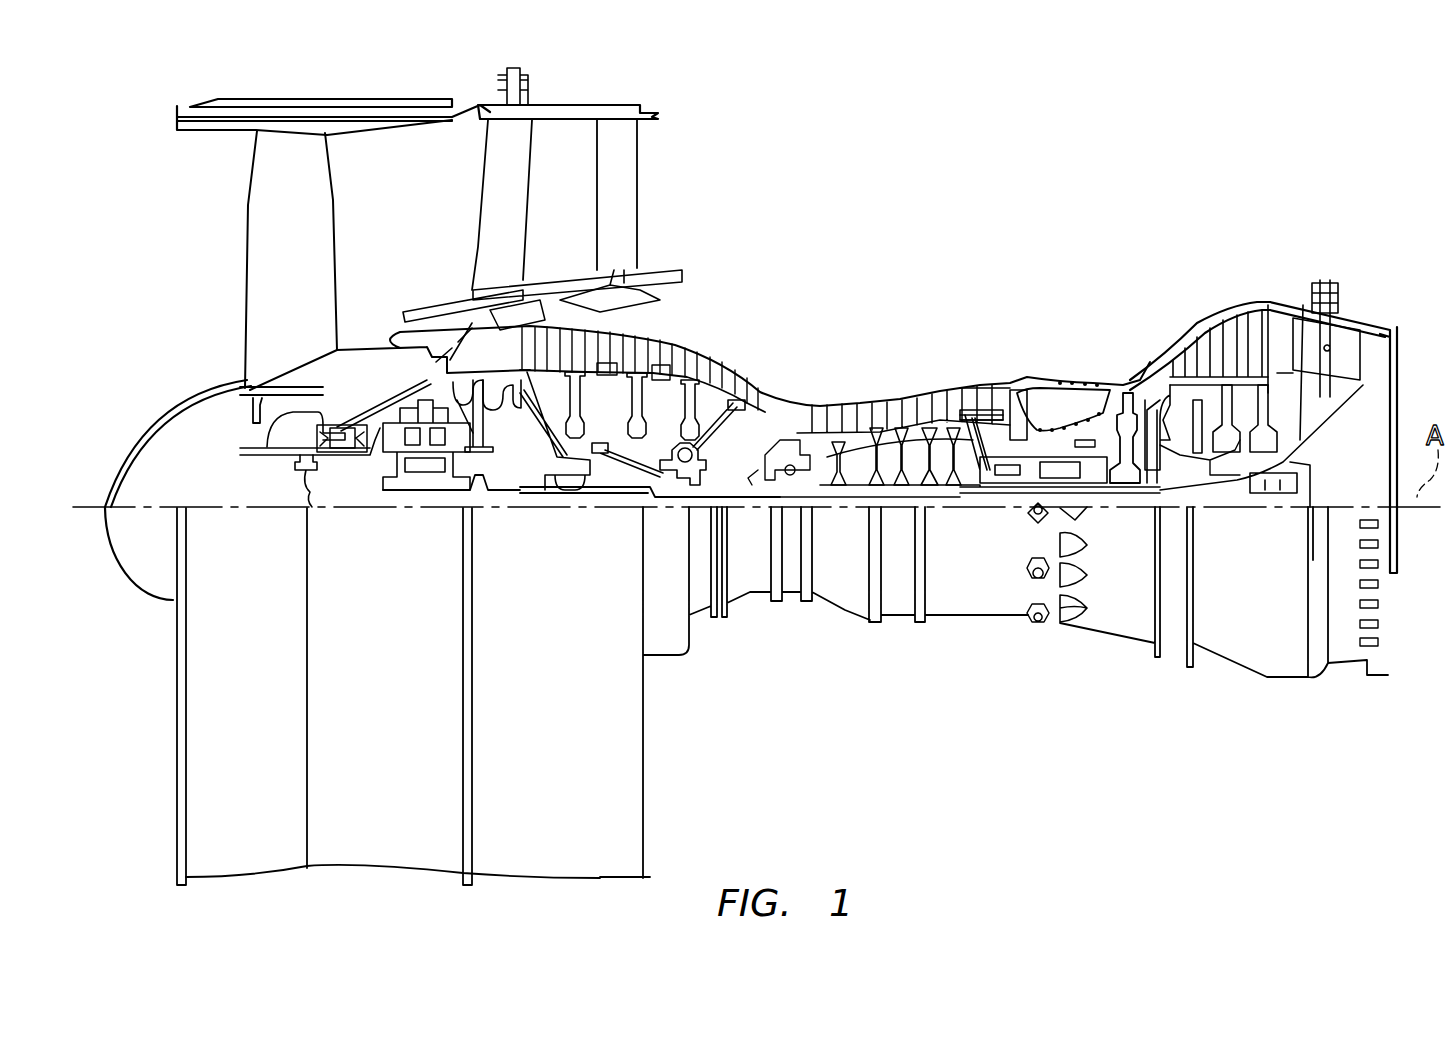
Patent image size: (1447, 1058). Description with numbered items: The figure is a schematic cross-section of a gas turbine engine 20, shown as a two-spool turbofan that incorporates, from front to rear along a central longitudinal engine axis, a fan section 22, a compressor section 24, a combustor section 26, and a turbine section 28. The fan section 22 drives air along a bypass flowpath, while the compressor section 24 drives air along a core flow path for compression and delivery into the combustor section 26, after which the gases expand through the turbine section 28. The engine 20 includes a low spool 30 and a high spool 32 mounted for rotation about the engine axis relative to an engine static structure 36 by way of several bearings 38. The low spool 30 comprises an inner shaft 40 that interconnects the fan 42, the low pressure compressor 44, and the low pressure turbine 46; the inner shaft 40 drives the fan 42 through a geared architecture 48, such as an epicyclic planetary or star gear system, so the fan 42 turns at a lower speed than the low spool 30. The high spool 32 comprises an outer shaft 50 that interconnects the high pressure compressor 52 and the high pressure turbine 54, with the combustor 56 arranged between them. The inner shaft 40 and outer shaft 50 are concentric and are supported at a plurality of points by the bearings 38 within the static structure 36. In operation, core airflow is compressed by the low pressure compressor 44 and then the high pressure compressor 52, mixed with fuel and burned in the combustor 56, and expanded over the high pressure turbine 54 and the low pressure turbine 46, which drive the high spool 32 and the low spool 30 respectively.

The gas turbine engine 20 is at (1127, 160).
The fan section 22 is at (175, 92).
The compressor section 24 is at (480, 244).
The combustor section 26 is at (1063, 244).
The turbine section 28 is at (1327, 244).
The low spool 30 is at (730, 461).
The high spool 32 is at (972, 418).
The engine static structure 36 is at (895, 618).
The bearings 38 is at (500, 583).
The inner shaft 40 is at (1093, 487).
The fan 42 is at (306, 313).
The low pressure compressor 44 is at (663, 353).
The low pressure turbine 46 is at (1240, 335).
The geared architecture 48 is at (423, 457).
The outer shaft 50 is at (1140, 462).
The high pressure compressor 52 is at (820, 418).
The high pressure turbine 54 is at (1127, 397).
The combustor 56 is at (1063, 410).